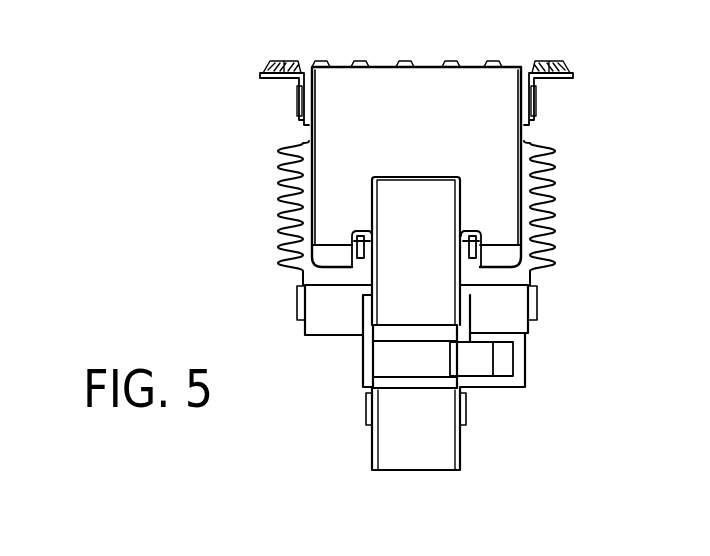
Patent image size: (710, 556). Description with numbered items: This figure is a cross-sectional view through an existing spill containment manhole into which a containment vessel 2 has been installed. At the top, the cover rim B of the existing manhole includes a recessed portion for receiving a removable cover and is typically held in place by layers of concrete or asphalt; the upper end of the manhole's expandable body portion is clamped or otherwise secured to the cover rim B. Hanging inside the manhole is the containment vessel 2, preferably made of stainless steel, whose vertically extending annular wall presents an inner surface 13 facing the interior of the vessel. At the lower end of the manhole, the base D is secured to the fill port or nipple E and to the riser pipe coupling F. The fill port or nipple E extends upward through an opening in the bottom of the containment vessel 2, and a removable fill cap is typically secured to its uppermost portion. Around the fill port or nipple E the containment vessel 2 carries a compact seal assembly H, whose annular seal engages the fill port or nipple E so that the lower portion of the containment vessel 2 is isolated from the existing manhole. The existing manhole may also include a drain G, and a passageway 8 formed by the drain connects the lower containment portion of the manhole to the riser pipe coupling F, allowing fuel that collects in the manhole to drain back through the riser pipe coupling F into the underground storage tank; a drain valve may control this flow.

The containment vessel 2 is at (334, 59).
The inner surface 13 is at (477, 82).
The cover rim B is at (592, 65).
The fill port or nipple E is at (570, 193).
The seal assembly H is at (355, 225).
The base D is at (556, 308).
The drain G is at (536, 363).
The passageway 8 is at (475, 367).
The riser pipe coupling F is at (476, 450).